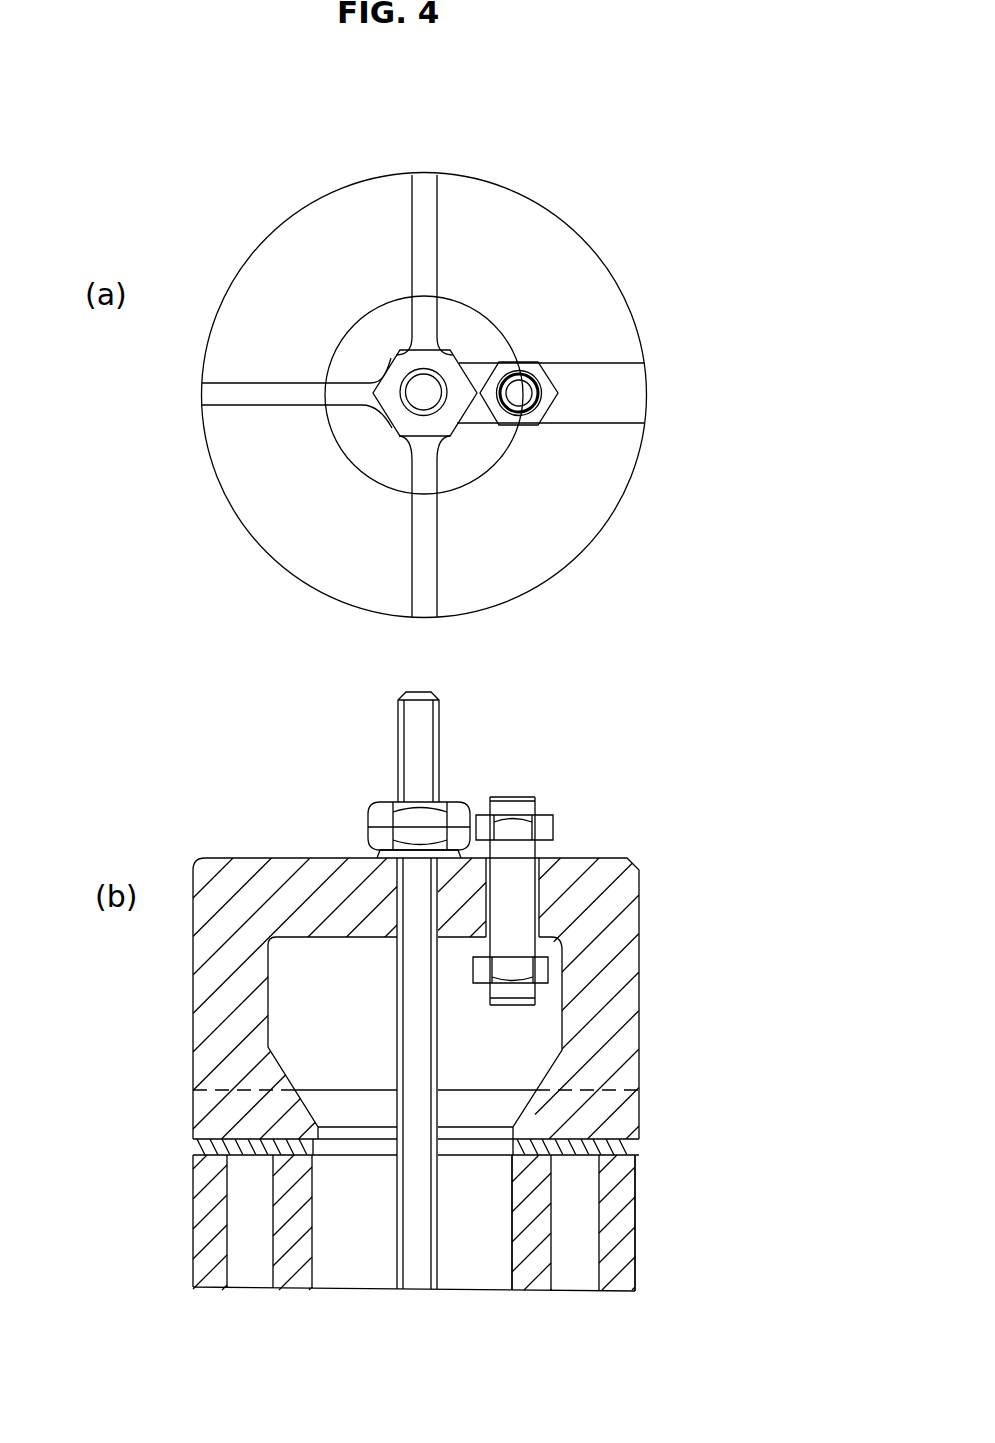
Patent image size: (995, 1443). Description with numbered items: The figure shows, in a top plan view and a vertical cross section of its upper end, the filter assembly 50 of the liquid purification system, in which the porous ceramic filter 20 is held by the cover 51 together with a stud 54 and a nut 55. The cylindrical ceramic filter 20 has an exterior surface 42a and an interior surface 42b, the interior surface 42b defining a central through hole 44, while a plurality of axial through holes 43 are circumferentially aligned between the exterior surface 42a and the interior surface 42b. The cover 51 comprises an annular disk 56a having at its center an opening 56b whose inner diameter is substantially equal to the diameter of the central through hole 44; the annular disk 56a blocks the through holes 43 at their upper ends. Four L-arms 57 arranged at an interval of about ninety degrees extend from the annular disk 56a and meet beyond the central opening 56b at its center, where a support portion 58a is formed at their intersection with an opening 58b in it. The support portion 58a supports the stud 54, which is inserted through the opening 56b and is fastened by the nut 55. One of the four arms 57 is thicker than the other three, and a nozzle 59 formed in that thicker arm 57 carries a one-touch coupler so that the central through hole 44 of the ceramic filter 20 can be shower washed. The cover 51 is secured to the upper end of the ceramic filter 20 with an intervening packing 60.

The porous ceramic filter 20 is at (623, 1218).
The exterior surface 42a is at (641, 1259).
The interior surface 42b is at (509, 1218).
The axial through holes 43 is at (588, 1182).
The central through hole 44 is at (477, 1273).
The filter assembly 50 is at (674, 877).
The cover 51 is at (612, 239).
The stud 54 is at (410, 750).
The nut 55 is at (449, 364).
The annular disk 56a is at (592, 519).
The opening 56b is at (352, 448).
The L-arms 57 is at (623, 402).
The support portion 58a is at (383, 420).
The opening 58b is at (397, 890).
The nozzle 59 is at (519, 362).
The packing 60 is at (601, 1139).